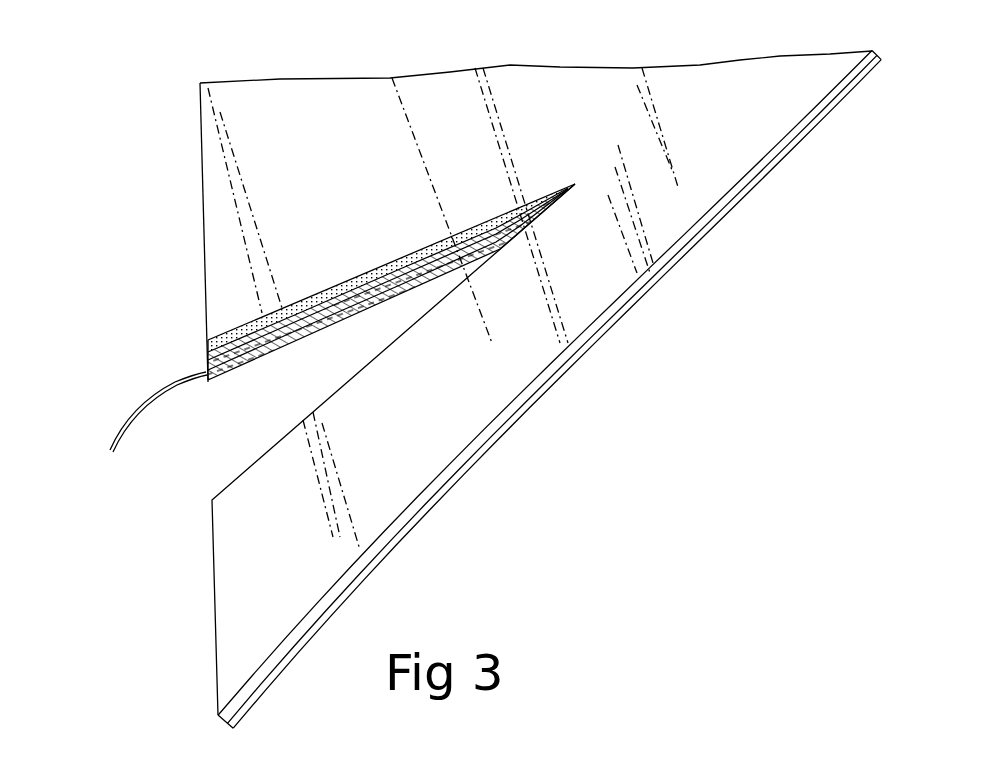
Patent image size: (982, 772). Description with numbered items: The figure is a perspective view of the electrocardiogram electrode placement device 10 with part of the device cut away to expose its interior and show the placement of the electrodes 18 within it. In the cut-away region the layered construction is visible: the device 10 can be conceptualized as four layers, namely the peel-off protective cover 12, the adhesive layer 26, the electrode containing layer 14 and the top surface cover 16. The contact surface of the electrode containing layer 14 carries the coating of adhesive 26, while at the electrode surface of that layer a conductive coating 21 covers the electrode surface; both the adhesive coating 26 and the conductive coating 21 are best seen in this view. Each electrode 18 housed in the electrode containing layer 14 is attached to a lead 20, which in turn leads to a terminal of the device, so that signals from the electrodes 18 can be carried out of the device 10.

The electrocardiogram electrode placement device 10 is at (667, 402).
The peel-off protective cover 12 is at (312, 120).
The electrode containing layer 14 is at (205, 370).
The top surface cover 16 is at (278, 358).
The electrode 18 is at (352, 282).
The lead 20 is at (112, 431).
The conductive coating 21 is at (473, 227).
The adhesive coating 26 is at (207, 355).